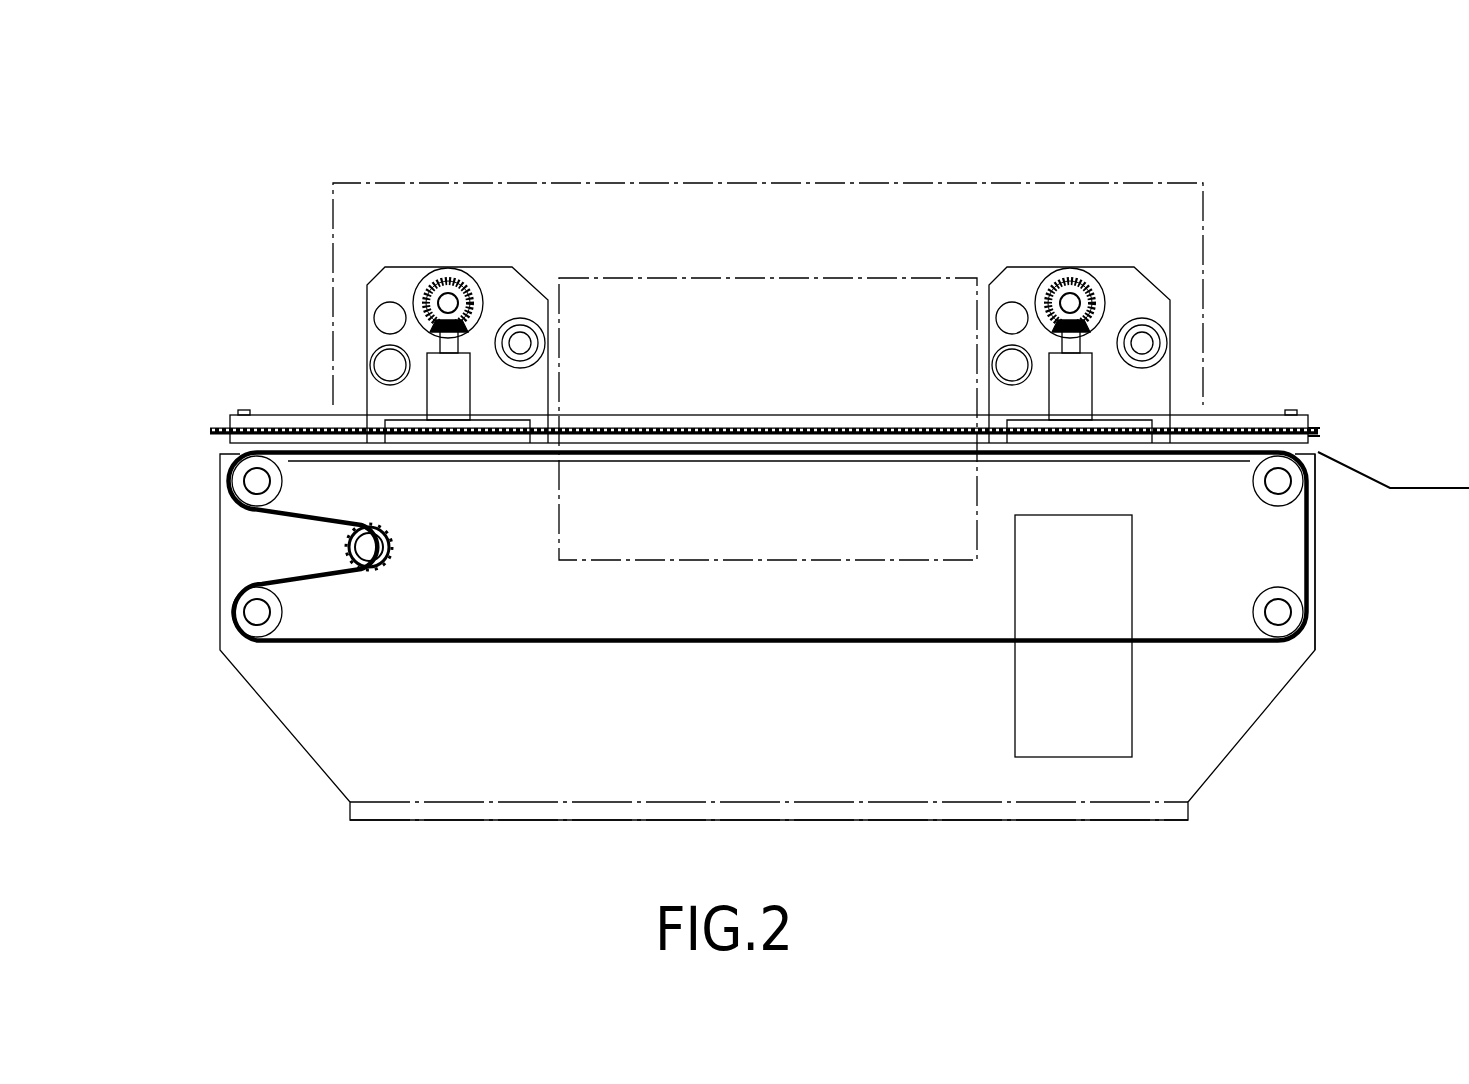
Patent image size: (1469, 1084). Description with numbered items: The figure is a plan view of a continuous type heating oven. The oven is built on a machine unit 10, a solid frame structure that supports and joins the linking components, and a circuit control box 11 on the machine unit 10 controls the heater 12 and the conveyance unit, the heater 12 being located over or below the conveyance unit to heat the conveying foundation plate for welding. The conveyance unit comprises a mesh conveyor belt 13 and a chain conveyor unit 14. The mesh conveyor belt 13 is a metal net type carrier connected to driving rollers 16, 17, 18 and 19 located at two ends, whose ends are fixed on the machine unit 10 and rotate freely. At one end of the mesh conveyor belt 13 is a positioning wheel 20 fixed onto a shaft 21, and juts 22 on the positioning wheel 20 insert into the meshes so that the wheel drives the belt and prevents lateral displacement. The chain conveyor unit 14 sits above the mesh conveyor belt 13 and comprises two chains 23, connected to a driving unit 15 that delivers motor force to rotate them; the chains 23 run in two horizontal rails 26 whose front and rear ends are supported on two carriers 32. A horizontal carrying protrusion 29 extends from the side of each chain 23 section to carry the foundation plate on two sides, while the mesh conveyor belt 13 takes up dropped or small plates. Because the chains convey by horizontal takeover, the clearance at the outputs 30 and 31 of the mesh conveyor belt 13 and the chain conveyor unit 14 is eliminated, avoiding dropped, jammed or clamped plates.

The machine unit 10 is at (1222, 687).
The circuit control box 11 is at (1082, 747).
The heater 12 is at (830, 310).
The mesh conveyor belt 13 is at (1315, 547).
The chain conveyor unit 14 is at (1243, 423).
The driving unit 15 is at (477, 287).
The driving roller 16 is at (242, 482).
The driving roller 17 is at (243, 625).
The driving roller 18 is at (1295, 474).
The driving roller 19 is at (1298, 618).
The positioning wheel 20 is at (390, 565).
The shaft 21 is at (372, 552).
The juts 22 is at (345, 537).
The chain 23 is at (1157, 428).
The rail 26 is at (1132, 325).
The carrying protrusion 29 is at (1318, 437).
The output 30 is at (1312, 573).
The output 31 is at (1325, 438).
The carrier 32 is at (414, 269).